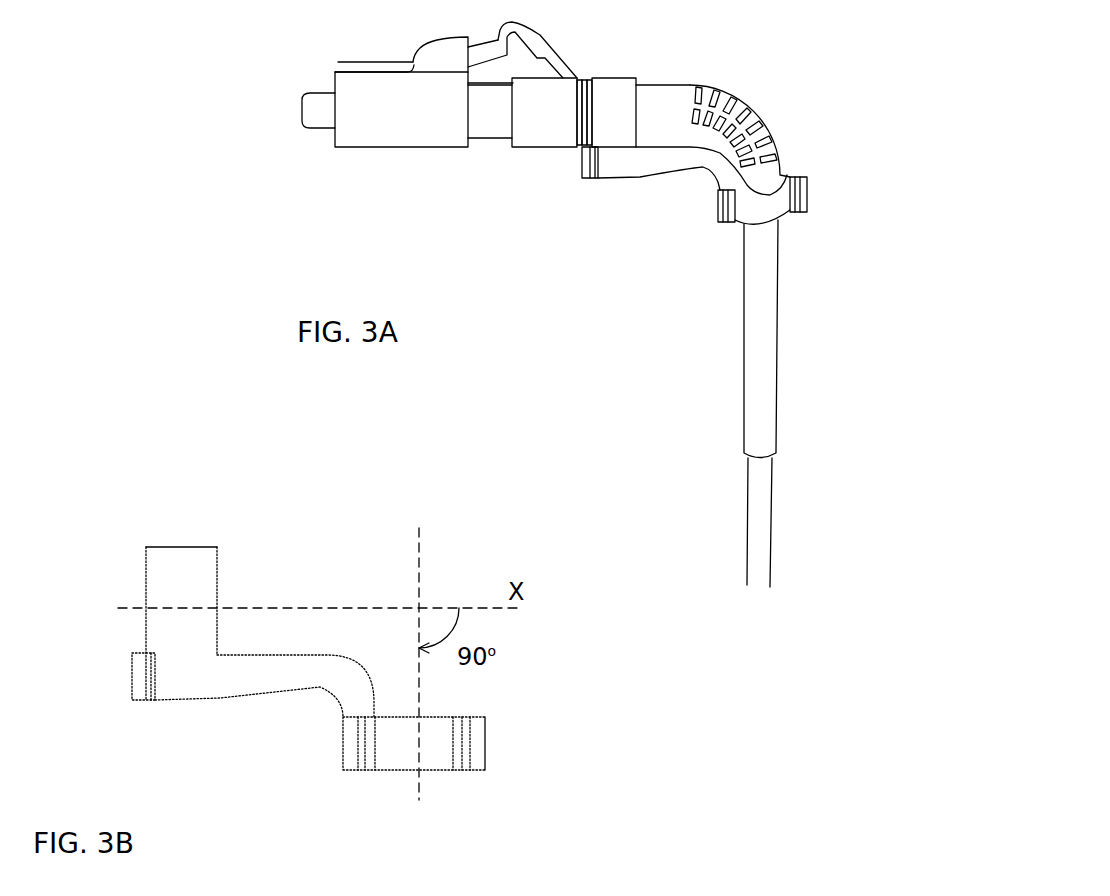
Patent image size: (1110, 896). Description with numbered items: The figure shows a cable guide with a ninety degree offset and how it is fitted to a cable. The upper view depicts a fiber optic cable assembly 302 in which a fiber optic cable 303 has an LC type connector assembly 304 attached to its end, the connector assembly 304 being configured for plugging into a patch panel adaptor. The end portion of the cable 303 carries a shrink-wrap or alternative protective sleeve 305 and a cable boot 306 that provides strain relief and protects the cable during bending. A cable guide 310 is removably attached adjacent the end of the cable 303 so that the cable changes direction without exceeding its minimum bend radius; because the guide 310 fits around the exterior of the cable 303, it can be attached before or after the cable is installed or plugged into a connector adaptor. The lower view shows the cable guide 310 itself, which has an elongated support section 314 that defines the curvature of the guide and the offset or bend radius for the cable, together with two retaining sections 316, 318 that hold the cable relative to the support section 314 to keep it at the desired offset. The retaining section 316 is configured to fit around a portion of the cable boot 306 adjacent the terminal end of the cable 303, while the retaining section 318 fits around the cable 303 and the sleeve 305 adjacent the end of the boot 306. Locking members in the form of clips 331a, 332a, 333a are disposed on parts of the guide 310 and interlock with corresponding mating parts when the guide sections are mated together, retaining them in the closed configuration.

In FIG. 3A, the fiber optic cable assembly 302 is at (587, 296).
In FIG. 3A, the fiber optic cable 303 is at (758, 513).
In FIG. 3A, the LC type connector assembly 304 is at (557, 160).
In FIG. 3A, the protective sleeve 305 is at (758, 315).
In FIG. 3A, the cable boot 306 is at (662, 98).
In FIG. 3A, the cable guide 310 is at (618, 143).
In FIG. 3B, the cable guide 310 is at (307, 683).
In FIG. 3B, the elongated support section 314 is at (362, 778).
In FIG. 3A, the retaining section 316 is at (623, 70).
In FIG. 3B, the retaining section 316 is at (118, 550).
In FIG. 3A, the retaining section 318 is at (800, 167).
In FIG. 3B, the retaining section 318 is at (420, 786).
In FIG. 3B, the clip 331a is at (142, 680).
In FIG. 3B, the clip 332a is at (355, 752).
In FIG. 3B, the clip 333a is at (509, 776).